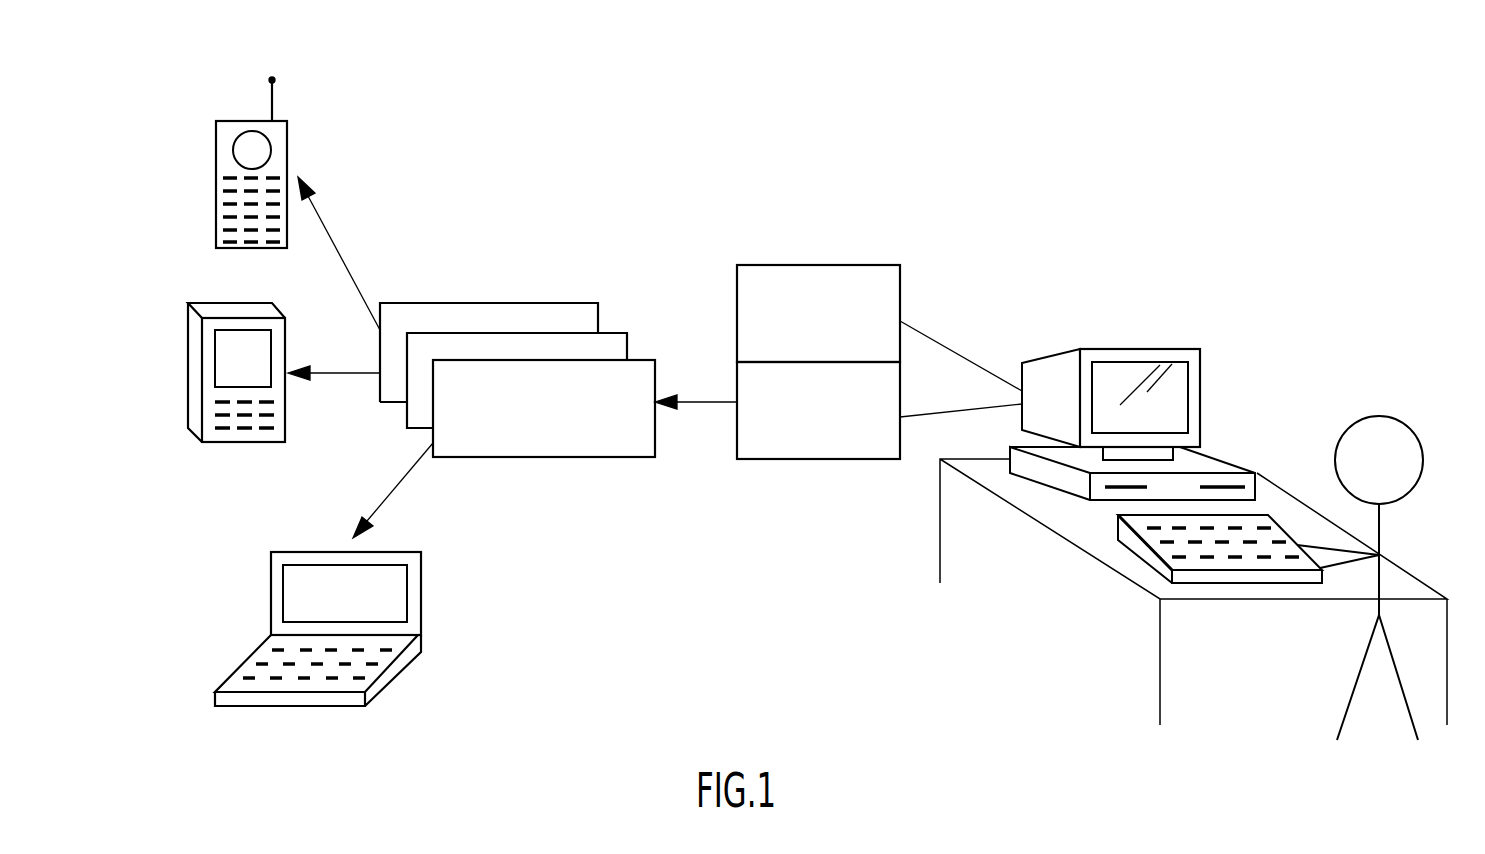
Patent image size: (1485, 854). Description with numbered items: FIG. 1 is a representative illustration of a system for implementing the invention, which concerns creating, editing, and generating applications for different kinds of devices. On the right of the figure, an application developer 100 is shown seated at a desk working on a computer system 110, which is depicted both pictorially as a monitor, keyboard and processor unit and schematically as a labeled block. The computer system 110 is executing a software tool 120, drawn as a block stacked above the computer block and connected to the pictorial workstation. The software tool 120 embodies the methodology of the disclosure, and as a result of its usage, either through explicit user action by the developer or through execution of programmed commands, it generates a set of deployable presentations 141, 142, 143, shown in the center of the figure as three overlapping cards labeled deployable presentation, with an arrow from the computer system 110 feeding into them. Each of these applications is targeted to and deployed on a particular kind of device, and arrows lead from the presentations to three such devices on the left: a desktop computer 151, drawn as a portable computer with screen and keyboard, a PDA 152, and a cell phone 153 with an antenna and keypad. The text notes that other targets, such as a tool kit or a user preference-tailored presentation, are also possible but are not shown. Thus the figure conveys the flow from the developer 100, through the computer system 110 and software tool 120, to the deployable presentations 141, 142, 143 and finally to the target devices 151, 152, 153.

The application developer 100 is at (1255, 414).
The computer system 110 is at (826, 459).
The software tool 120 is at (815, 265).
The deployable presentation 141 is at (620, 458).
The deployable presentation 142 is at (622, 333).
The deployable presentation 143 is at (512, 303).
The device 151 is at (271, 595).
The device 152 is at (190, 355).
The device 153 is at (216, 177).